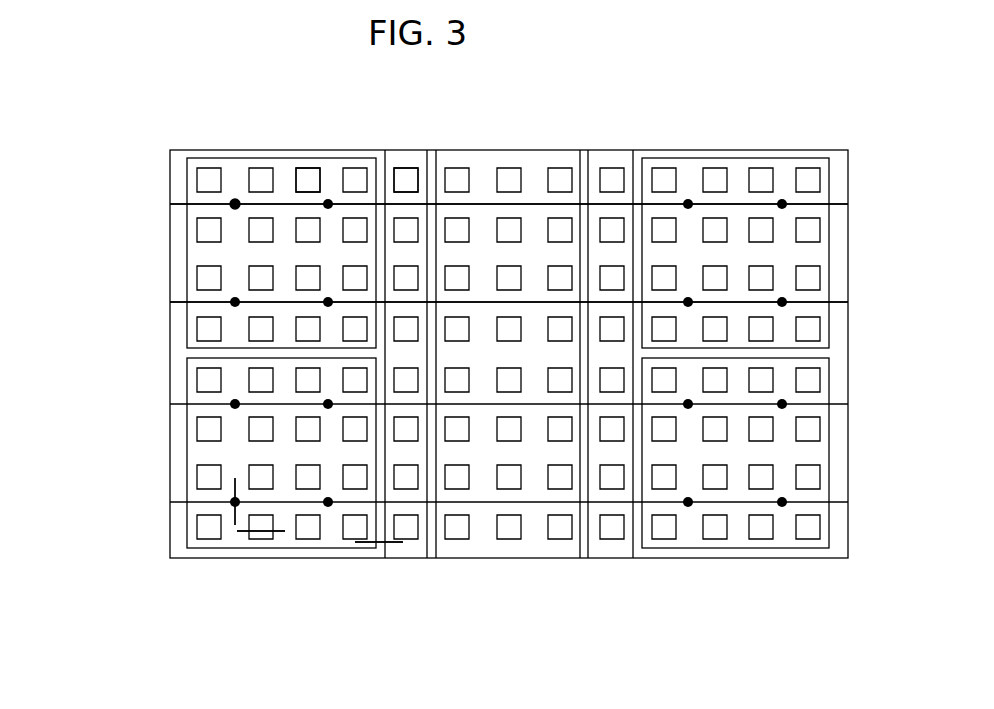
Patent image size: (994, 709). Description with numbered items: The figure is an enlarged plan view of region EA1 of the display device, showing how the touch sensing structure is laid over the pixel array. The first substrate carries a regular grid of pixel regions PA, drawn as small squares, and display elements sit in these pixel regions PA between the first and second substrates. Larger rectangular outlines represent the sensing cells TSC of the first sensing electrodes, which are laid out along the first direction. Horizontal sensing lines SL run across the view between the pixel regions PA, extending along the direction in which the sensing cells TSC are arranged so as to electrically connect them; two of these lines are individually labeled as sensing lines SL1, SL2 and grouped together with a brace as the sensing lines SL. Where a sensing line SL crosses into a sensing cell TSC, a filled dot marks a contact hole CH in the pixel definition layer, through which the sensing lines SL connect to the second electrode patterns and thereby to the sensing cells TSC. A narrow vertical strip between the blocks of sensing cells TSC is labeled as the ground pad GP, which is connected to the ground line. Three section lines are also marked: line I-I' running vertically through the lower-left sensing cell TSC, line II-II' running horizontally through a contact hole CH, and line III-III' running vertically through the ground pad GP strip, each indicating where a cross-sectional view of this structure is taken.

The region EA1 is at (690, 140).
The sensing cell TSC is at (268, 158).
The ground pad GP is at (404, 158).
The pixel region PA is at (309, 177).
The sensing line SL is at (105, 225).
The first sensing line SL1 is at (177, 207).
The second sensing line SL2 is at (178, 300).
The contact hole CH is at (235, 200).
The section line II-II' II is at (186, 501).
The section line II- II' is at (186, 504).
The section line I-I' I is at (261, 567).
The section line I- I' is at (261, 567).
The section line III-III' III is at (379, 576).
The section line III- III' is at (380, 576).